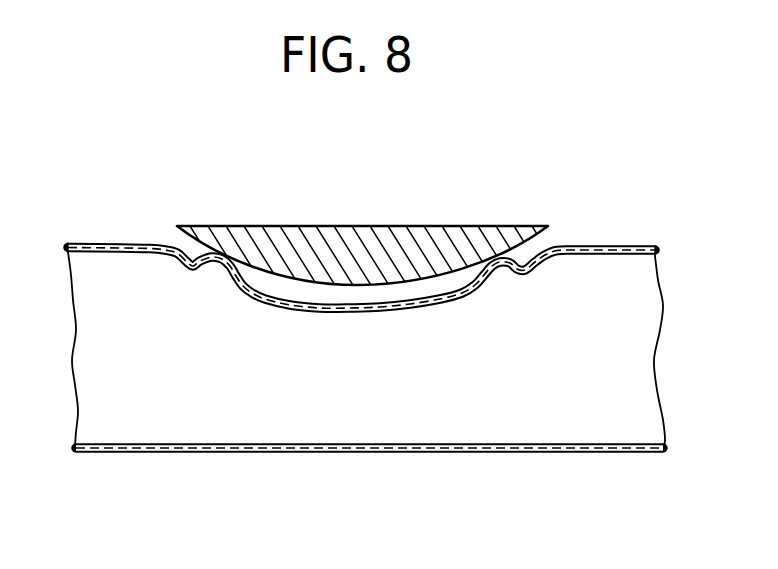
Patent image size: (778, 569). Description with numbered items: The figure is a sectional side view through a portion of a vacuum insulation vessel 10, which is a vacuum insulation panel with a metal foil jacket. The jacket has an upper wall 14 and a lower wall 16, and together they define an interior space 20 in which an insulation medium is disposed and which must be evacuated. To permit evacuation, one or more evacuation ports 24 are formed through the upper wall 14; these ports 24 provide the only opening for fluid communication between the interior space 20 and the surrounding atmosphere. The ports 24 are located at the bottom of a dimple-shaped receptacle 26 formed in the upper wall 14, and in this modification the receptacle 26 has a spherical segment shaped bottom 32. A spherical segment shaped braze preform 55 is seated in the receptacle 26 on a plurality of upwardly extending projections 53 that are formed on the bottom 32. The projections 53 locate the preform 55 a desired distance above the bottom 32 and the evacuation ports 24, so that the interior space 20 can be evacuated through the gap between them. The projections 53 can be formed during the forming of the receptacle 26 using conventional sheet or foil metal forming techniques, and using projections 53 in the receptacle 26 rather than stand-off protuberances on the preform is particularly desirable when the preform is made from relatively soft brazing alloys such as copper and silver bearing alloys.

The vacuum insulation vessel 10 is at (180, 163).
The upper wall 14 is at (608, 245).
The lower wall 16 is at (515, 453).
The interior space 20 is at (485, 410).
The evacuation ports 24 is at (467, 296).
The receptacle 26 is at (261, 300).
The bottom 32 is at (467, 297).
The projections 53 is at (237, 273).
The spherical segment shaped preform 55 is at (394, 226).